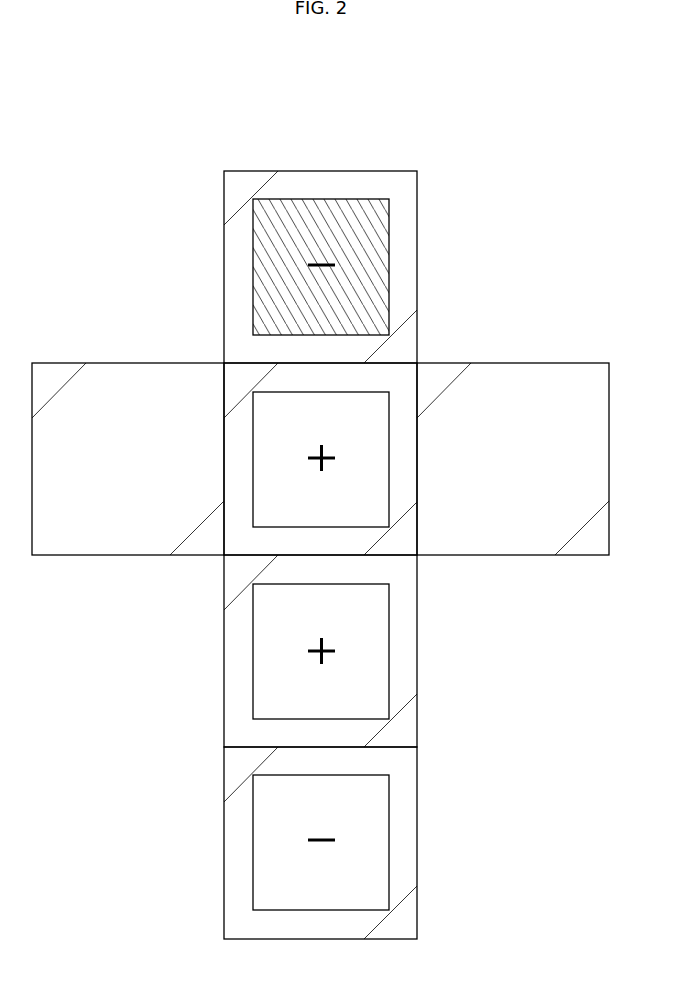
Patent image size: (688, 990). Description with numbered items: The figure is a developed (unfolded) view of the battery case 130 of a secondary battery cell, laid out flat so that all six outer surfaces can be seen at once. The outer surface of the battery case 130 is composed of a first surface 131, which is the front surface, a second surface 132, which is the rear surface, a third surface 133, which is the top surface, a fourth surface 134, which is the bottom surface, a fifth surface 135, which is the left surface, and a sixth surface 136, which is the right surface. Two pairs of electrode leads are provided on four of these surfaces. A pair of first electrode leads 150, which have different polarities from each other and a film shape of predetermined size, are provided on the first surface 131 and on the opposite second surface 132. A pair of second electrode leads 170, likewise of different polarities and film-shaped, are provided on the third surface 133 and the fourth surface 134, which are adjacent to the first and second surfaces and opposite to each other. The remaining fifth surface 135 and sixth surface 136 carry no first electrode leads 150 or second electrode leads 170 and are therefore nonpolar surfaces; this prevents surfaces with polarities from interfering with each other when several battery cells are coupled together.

The battery case 130 is at (107, 111).
The first surface 131 is at (403, 377).
The second surface 132 is at (405, 848).
The third surface 133 is at (405, 186).
The fourth surface 134 is at (405, 655).
The fifth surface 135 is at (137, 373).
The sixth surface 136 is at (542, 373).
The first electrode leads 150 is at (262, 430).
The second electrode leads 170 is at (383, 237).